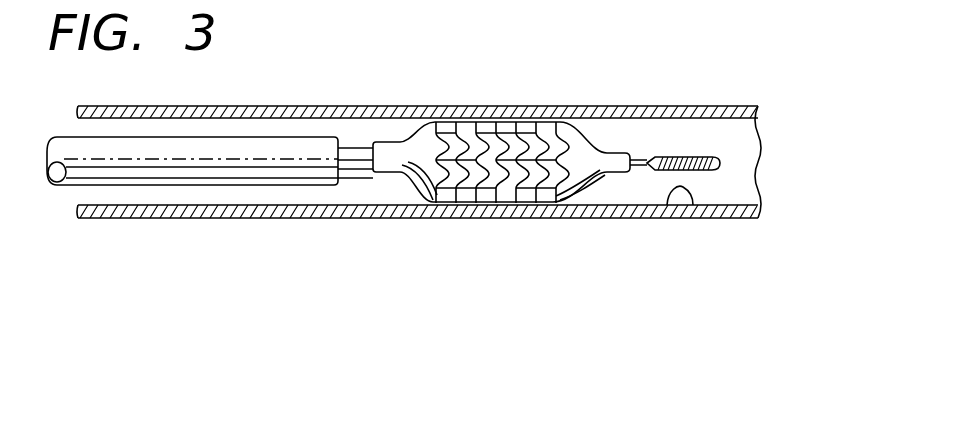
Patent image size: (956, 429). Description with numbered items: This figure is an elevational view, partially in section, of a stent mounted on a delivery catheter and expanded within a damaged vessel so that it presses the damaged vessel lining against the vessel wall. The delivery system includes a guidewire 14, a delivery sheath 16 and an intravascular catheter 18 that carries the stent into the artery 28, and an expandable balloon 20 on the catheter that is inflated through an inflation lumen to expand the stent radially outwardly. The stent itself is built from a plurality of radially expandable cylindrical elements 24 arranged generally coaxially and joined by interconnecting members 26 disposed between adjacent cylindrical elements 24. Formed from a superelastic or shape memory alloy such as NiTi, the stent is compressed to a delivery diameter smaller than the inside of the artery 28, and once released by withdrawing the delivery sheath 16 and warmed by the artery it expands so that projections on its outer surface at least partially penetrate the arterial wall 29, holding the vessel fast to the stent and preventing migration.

The guidewire 14 is at (640, 155).
The delivery sheath 16 is at (137, 173).
The intravascular catheter 18 is at (358, 155).
The expandable balloon 20 is at (420, 172).
The radially expandable cylindrical elements 24 is at (510, 123).
The interconnecting members 26 is at (485, 197).
The artery 28 is at (692, 113).
The arterial wall 29 is at (670, 205).